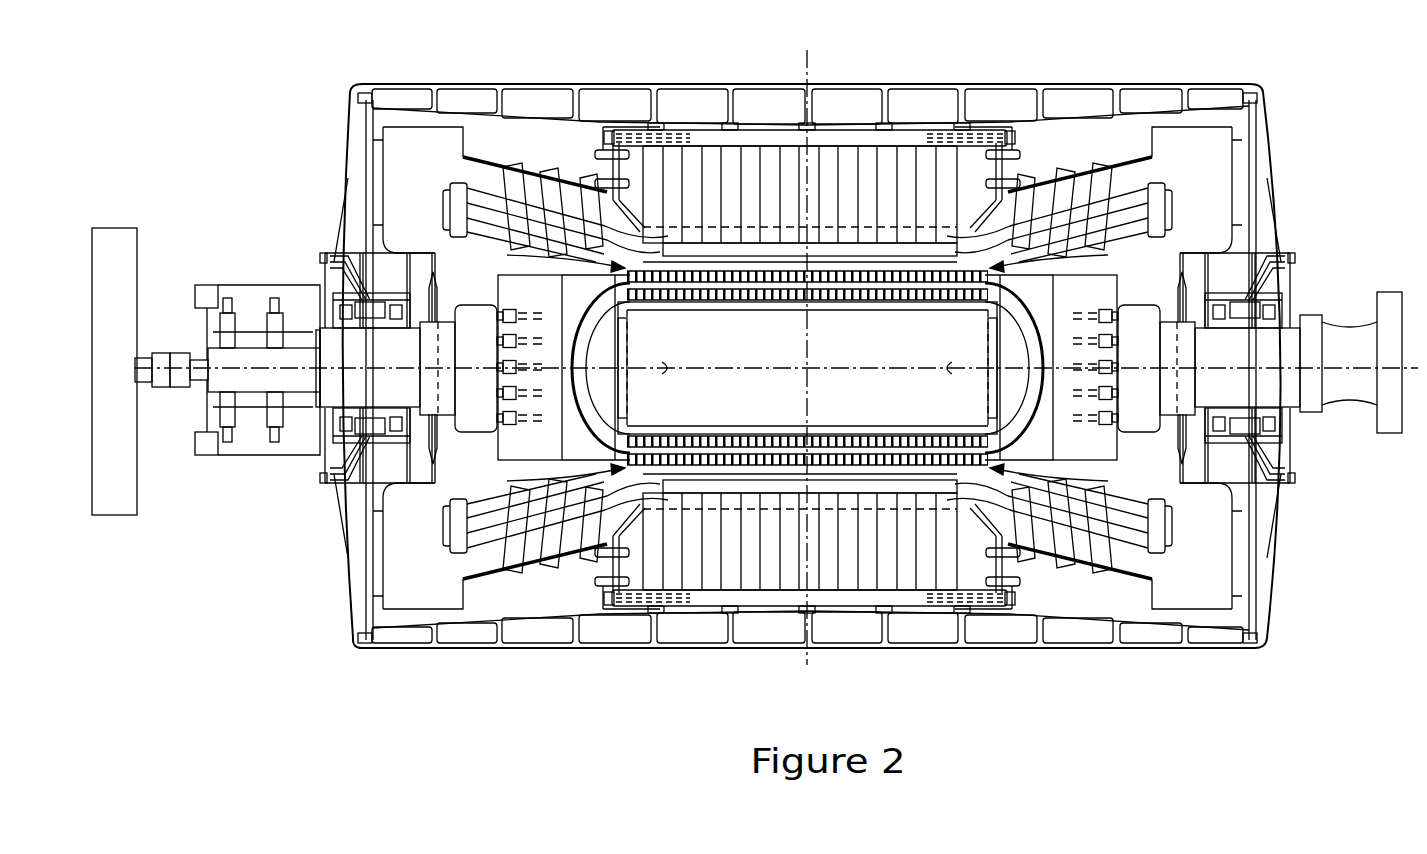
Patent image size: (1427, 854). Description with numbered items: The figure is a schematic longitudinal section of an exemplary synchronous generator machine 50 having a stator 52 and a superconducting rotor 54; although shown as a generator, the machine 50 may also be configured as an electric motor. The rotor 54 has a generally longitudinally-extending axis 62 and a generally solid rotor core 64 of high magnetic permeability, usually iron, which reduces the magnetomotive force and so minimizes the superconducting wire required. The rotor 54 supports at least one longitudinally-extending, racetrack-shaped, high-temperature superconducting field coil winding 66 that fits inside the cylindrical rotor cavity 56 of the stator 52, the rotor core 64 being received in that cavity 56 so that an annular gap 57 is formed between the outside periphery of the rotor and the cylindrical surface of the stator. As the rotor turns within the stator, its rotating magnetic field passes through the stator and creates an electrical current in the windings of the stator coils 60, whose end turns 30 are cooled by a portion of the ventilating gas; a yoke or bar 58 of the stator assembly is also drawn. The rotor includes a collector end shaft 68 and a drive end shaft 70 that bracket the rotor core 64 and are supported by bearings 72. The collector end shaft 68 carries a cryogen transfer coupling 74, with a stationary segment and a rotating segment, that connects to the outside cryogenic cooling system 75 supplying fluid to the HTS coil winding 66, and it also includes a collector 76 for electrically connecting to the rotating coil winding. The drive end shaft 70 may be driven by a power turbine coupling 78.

The end turns of the stator coil windings 30 is at (450, 192).
The synchronous generator machine 50 is at (1029, 678).
The stator 52 is at (708, 172).
The superconducting rotor 54 is at (488, 410).
The cylindrical rotor cavity 56 is at (593, 150).
The annular gap 57 is at (1147, 463).
The stator yoke bar 58 is at (905, 225).
The stator coils 60 is at (1020, 190).
The longitudinally-extending axis 62 is at (318, 325).
The rotor core 64 is at (775, 354).
The HTS coil winding 66 is at (592, 318).
The collector end shaft 68 is at (397, 348).
The drive end shaft 70 is at (1275, 342).
The bearings 72 is at (343, 483).
The cryogen transfer coupling 74 is at (178, 353).
The cryogenic cooling system 75 is at (118, 228).
The collector 76 is at (268, 445).
The power turbine coupling 78 is at (1393, 428).